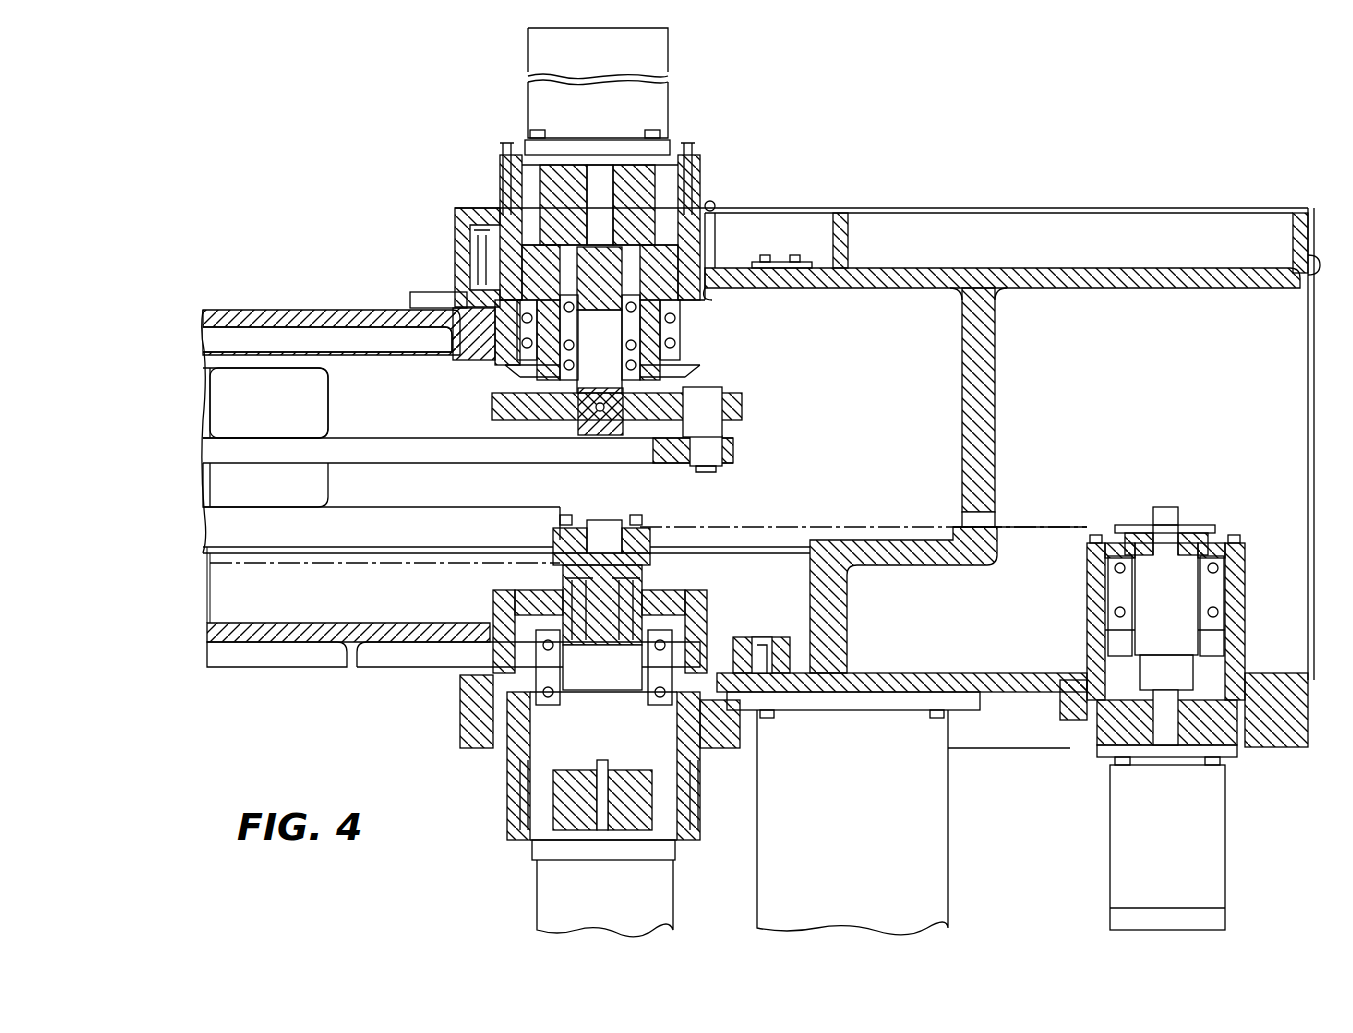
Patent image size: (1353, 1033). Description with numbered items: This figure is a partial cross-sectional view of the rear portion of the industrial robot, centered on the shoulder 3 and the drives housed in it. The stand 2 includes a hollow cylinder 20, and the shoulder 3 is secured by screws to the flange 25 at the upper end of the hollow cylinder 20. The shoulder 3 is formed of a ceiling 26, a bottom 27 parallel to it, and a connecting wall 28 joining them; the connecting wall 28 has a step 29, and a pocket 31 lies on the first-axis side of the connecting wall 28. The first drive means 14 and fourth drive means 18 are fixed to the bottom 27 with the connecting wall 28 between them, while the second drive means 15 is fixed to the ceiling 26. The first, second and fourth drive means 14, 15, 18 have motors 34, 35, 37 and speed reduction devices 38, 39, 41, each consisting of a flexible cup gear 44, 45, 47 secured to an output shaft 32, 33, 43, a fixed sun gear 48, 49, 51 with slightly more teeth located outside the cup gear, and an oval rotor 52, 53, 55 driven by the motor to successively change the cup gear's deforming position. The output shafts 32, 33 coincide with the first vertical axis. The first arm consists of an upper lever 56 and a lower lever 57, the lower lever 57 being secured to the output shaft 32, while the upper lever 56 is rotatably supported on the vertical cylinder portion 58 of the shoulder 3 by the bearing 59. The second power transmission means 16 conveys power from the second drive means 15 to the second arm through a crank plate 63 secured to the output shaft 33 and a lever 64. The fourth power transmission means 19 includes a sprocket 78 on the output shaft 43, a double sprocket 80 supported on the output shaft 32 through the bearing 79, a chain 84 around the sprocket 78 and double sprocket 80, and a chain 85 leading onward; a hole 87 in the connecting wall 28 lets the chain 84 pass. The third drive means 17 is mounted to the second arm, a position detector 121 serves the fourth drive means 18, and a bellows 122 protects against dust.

The stand 2 is at (948, 845).
The shoulder 3 is at (1312, 275).
The first drive means 14 is at (537, 905).
The second drive means 15 is at (535, 100).
The second power transmission means 16 is at (393, 438).
The third drive means 17 is at (318, 488).
The fourth drive means 18 is at (1220, 855).
The fourth power transmission means 19 is at (395, 565).
The hollow cylinder 20 is at (948, 800).
The flange 25 is at (980, 702).
The ceiling 26 is at (1115, 282).
The bottom 27 is at (928, 675).
The connecting wall 28 is at (998, 405).
The step 29 is at (888, 568).
The pocket 31 is at (905, 295).
The output shaft 32 is at (605, 530).
The output shaft 33 is at (593, 440).
The motor 34 is at (537, 885).
The motor 35 is at (665, 100).
The motor 37 is at (1220, 828).
The speed reduction device 38 is at (515, 762).
The speed reduction device 39 is at (713, 225).
The speed reduction device 41 is at (1228, 690).
The output shaft 43 is at (1170, 508).
The flexible cup gear 44 is at (665, 758).
The flexible cup gear 45 is at (500, 230).
The flexible cup gear 47 is at (1087, 668).
The fixed sun gear 48 is at (695, 790).
The fixed sun gear 49 is at (693, 183).
The fixed sun gear 51 is at (1248, 735).
The oval rotor 52 is at (633, 810).
The oval rotor 53 is at (575, 185).
The oval rotor 55 is at (1190, 735).
The upper lever 56 is at (330, 310).
The lower lever 57 is at (296, 645).
The vertical cylinder portion 58 is at (690, 375).
The bearing 59 is at (690, 330).
The crank plate 63 is at (725, 410).
The lever 64 is at (420, 463).
The sprocket 78 is at (1120, 525).
The bearing 79 is at (640, 523).
The double sprocket 80 is at (560, 525).
The chain 84 is at (1028, 530).
The chain 85 is at (315, 563).
The hole 87 is at (1000, 500).
The position detector 121 is at (1220, 915).
The bellows 122 is at (318, 395).